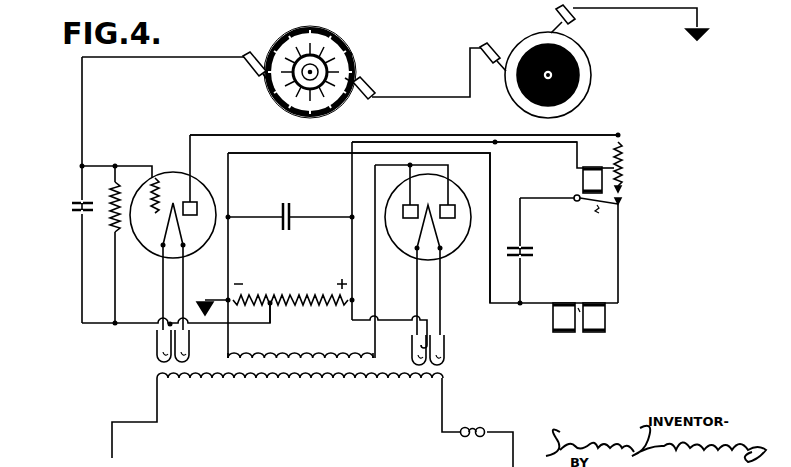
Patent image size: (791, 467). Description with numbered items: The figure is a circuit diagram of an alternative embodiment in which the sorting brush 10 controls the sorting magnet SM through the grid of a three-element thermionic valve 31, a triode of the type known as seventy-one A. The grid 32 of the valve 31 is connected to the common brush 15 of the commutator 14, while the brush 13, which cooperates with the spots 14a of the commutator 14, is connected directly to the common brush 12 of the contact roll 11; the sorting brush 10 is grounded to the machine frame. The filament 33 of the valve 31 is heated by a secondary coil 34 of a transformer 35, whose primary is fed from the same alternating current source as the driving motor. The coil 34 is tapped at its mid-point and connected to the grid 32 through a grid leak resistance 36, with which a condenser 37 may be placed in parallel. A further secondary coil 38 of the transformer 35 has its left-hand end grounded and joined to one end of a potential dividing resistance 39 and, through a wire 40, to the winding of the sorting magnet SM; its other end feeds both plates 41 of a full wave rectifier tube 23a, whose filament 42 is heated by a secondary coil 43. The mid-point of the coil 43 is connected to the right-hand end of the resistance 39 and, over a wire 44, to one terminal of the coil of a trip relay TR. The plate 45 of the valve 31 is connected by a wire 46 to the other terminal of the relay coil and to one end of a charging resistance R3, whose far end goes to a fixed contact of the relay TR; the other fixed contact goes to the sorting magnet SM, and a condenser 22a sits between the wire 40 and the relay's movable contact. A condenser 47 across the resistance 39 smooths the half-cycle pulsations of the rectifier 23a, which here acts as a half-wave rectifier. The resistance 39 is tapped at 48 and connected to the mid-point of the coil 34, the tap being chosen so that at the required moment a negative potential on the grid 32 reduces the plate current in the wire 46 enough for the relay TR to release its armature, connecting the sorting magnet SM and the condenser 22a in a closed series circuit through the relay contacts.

The sorting brush 10 is at (575, 16).
The contact roll 11 is at (584, 88).
The common brush 12 is at (489, 47).
The brush 13 is at (373, 82).
The commutator 14 is at (272, 38).
The spots 14a is at (352, 43).
The common brush 15 is at (246, 70).
The condenser 22a is at (536, 254).
The full wave rectifier tube 23a is at (456, 250).
The thermionic valve 31 is at (150, 248).
The grid 32 is at (157, 182).
The filament 33 is at (186, 240).
The secondary coil 34 is at (158, 352).
The transformer 35 is at (157, 373).
The grid leak resistance 36 is at (112, 225).
The condenser 37 is at (70, 205).
The secondary coil 38 is at (298, 353).
The potential dividing resistance 39 is at (297, 297).
The wire 40 is at (318, 155).
The plates 41 is at (415, 203).
The filament 42 is at (447, 214).
The secondary coil 43 is at (444, 352).
The wire 44 is at (495, 144).
The plate 45 is at (198, 208).
The wire 46 is at (508, 136).
The condenser 47 is at (282, 202).
The tap 48 is at (270, 306).
The trip relay TR is at (583, 182).
The charging resistance R3 is at (623, 172).
The sorting magnet SM is at (592, 325).